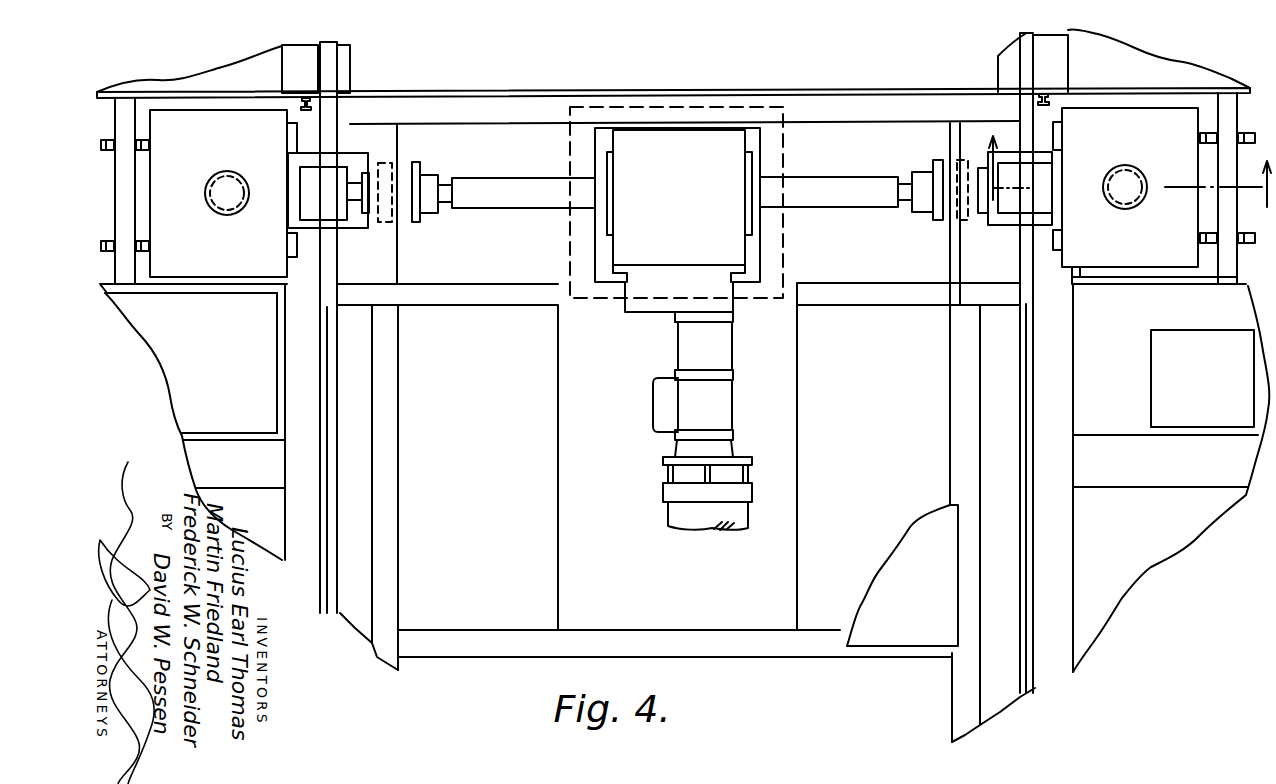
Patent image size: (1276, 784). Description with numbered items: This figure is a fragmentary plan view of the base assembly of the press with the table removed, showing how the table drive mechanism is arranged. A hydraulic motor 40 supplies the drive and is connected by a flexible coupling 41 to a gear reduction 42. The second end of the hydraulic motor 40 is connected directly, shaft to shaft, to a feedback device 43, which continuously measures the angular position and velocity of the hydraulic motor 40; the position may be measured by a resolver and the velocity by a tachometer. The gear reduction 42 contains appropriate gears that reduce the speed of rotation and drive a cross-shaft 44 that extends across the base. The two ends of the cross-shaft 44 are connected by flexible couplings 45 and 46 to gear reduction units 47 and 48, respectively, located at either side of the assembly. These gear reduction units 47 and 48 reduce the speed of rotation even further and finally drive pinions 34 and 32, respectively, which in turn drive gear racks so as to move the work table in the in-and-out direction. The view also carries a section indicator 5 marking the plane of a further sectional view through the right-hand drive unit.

The gear reduction unit 47 is at (194, 130).
The pinion 34 is at (226, 201).
The flexible coupling 45 is at (421, 186).
The cross-shaft 44 is at (518, 194).
The gear reduction 42 is at (676, 209).
The flexible coupling 46 is at (945, 185).
The section line 5- 5 is at (1119, 168).
The gear reduction unit 48 is at (1095, 118).
The pinion 32 is at (1128, 195).
The flexible coupling 41 is at (718, 343).
The hydraulic motor 40 is at (715, 408).
The feedback device 43 is at (735, 510).